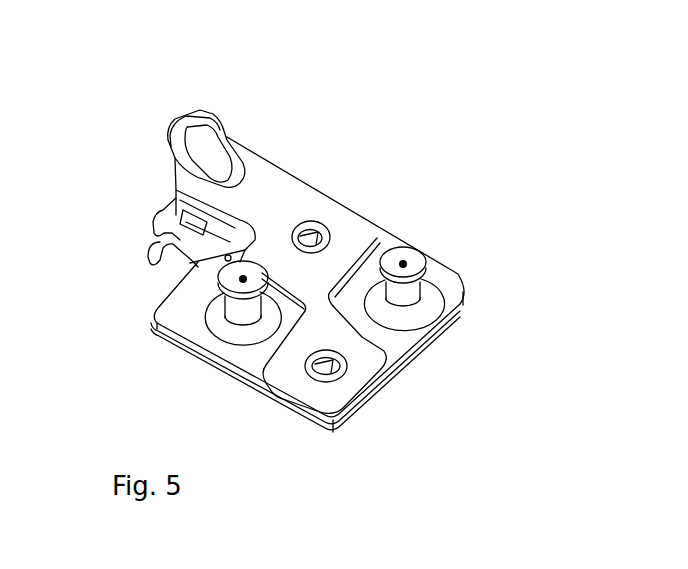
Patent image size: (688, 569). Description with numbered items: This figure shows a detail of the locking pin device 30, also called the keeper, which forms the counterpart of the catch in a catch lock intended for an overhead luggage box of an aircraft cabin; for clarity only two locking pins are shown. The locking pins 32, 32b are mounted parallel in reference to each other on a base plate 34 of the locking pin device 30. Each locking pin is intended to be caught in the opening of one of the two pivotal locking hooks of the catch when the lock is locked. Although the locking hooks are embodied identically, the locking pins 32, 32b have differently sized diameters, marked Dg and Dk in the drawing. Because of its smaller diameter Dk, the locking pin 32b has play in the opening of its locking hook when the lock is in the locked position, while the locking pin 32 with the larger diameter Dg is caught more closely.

The locking pin device 30 is at (331, 219).
The locking pin 32 is at (243, 278).
The locking pin 32b is at (403, 262).
The base plate 34 is at (447, 285).